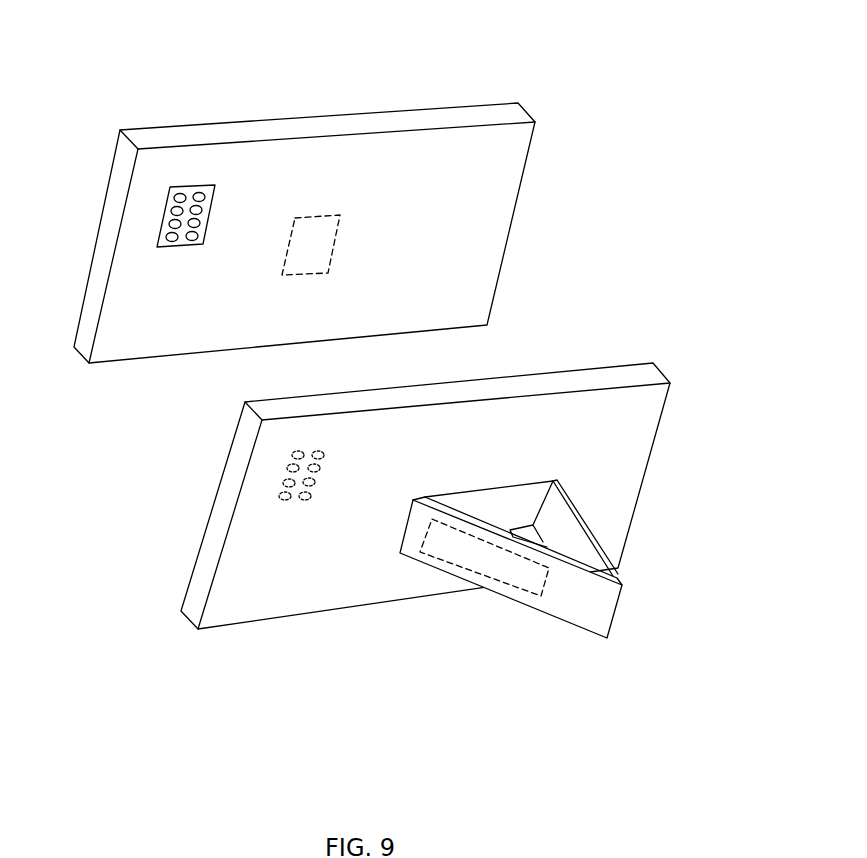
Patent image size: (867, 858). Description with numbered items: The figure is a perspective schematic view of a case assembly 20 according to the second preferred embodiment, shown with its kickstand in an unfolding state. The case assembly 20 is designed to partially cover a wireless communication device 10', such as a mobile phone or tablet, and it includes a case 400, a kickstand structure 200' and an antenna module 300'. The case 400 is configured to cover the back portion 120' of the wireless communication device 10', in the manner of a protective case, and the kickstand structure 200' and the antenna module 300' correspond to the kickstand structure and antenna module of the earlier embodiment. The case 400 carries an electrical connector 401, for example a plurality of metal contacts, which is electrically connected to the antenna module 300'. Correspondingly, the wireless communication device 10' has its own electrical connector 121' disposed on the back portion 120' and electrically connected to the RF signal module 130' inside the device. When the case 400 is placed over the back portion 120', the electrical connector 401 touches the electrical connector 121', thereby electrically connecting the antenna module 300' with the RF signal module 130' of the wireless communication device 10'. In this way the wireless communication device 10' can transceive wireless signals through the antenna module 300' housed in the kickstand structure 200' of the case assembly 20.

The wireless communication device 10' is at (339, 188).
The back portion 120' is at (339, 233).
The electrical connector 121' is at (221, 216).
The RF signal module 130' is at (346, 245).
The case assembly 20 is at (397, 509).
The case 400 is at (426, 470).
The electrical connector 401 is at (320, 453).
The kickstand structure 200' is at (511, 594).
The antenna module 300' is at (484, 586).